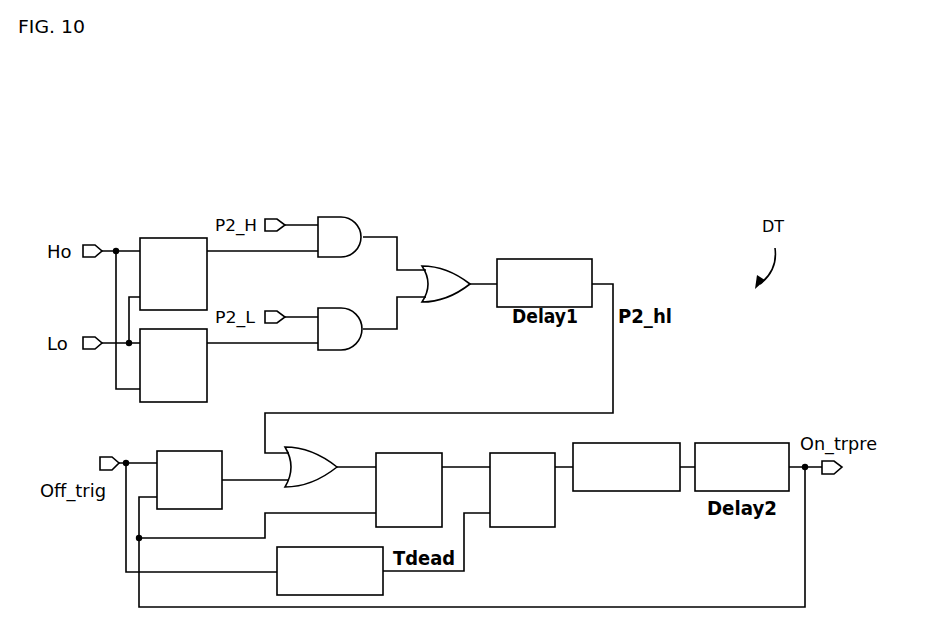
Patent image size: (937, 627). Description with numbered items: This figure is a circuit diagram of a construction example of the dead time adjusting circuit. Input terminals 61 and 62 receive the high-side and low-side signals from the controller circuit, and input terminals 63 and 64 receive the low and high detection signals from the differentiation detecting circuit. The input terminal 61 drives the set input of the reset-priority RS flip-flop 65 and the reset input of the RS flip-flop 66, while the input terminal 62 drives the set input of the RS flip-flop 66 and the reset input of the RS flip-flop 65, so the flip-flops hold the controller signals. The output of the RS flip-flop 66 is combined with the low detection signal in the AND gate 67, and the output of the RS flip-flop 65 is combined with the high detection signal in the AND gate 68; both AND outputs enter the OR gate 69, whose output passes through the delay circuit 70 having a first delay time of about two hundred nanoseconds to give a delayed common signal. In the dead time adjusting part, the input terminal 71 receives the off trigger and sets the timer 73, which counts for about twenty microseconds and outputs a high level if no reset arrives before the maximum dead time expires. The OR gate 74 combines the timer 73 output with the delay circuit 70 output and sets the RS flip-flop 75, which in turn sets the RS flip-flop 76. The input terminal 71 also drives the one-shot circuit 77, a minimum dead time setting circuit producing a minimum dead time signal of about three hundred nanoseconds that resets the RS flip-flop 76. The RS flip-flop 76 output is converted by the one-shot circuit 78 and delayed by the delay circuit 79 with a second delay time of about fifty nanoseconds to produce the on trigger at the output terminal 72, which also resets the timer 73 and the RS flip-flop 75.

The input terminal 61 is at (90, 243).
The input terminal 62 is at (90, 335).
The input terminal 63 is at (274, 311).
The input terminal 64 is at (274, 219).
The RS flip-flop 65 is at (170, 238).
The RS flip-flop 66 is at (207, 372).
The AND gate 67 is at (340, 308).
The AND gate 68 is at (340, 217).
The OR gate 69 is at (437, 266).
The delay circuit 70 is at (545, 259).
The input terminal 71 is at (106, 456).
The output terminal 72 is at (831, 476).
The timer 73 is at (190, 451).
The OR gate 74 is at (322, 447).
The RS flip-flop 75 is at (410, 453).
The RS flip-flop 76 is at (518, 453).
The one-shot circuit 77 is at (313, 547).
The one-shot circuit 78 is at (645, 443).
The delay circuit 79 is at (742, 443).